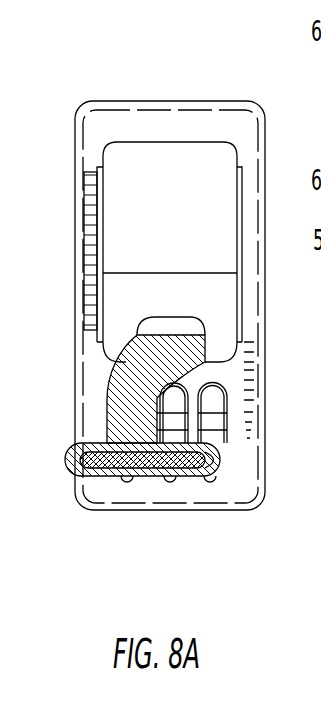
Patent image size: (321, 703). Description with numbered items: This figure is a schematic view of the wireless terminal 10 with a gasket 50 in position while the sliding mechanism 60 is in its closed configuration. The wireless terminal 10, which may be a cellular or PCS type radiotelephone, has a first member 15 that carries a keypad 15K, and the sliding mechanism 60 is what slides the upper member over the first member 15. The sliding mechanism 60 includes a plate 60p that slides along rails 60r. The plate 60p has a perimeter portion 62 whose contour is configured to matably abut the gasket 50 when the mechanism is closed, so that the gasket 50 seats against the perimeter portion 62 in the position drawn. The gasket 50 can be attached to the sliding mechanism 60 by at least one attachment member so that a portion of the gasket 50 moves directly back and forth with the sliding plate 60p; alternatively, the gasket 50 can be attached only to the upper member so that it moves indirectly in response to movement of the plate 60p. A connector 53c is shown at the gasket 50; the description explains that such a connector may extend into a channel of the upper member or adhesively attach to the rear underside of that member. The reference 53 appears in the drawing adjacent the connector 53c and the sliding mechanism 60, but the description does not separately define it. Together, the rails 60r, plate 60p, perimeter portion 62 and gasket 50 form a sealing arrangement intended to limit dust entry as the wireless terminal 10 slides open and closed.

The wireless terminal 10 is at (55, 125).
The first member 15 is at (140, 118).
The sliding mechanism 60 is at (103, 300).
The rails 60r is at (100, 232).
The plate 60p is at (213, 300).
The perimeter portion 62 is at (128, 316).
The gasket 50 is at (115, 382).
The connector 53c is at (62, 468).
The actuator arm 53 is at (262, 338).
The keypad 15K is at (215, 460).